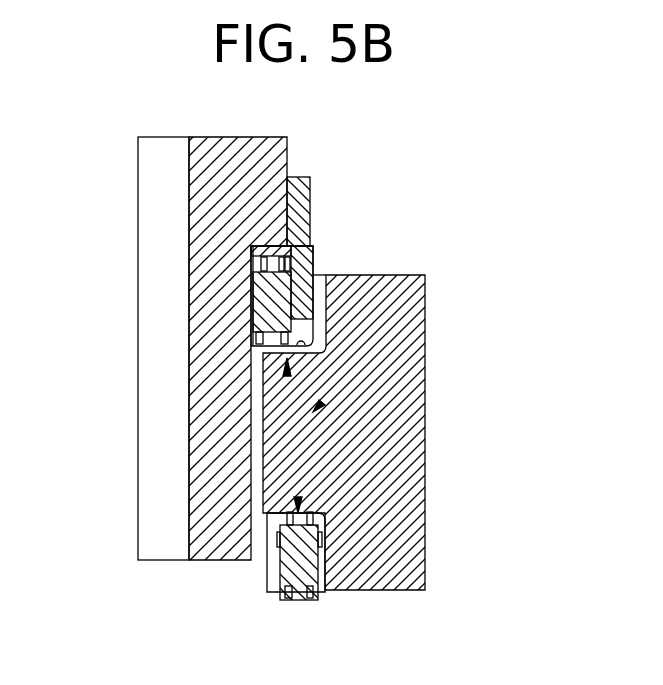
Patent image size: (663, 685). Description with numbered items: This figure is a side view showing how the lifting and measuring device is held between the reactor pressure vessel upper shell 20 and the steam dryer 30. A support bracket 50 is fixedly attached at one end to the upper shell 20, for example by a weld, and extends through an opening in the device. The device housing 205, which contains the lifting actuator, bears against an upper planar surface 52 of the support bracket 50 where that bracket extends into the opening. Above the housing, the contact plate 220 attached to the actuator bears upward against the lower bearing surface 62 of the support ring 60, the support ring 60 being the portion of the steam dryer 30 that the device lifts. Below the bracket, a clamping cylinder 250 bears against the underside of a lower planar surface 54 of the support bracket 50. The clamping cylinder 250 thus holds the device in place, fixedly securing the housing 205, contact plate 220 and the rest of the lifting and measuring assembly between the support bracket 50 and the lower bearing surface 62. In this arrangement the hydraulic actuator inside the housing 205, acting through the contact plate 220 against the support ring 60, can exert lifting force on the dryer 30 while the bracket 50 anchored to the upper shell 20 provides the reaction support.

The RPV upper shell 20 is at (424, 435).
The steam dryer 30 is at (138, 186).
The support bracket 50 is at (320, 404).
The upper planar surface 52 is at (287, 376).
The lower planar surface 54 is at (297, 497).
The support ring 60 is at (232, 137).
The lower bearing surface 62 is at (267, 245).
The device housing 205 is at (263, 303).
The contact plate 220 is at (317, 258).
The clamping cylinder 250 is at (298, 600).